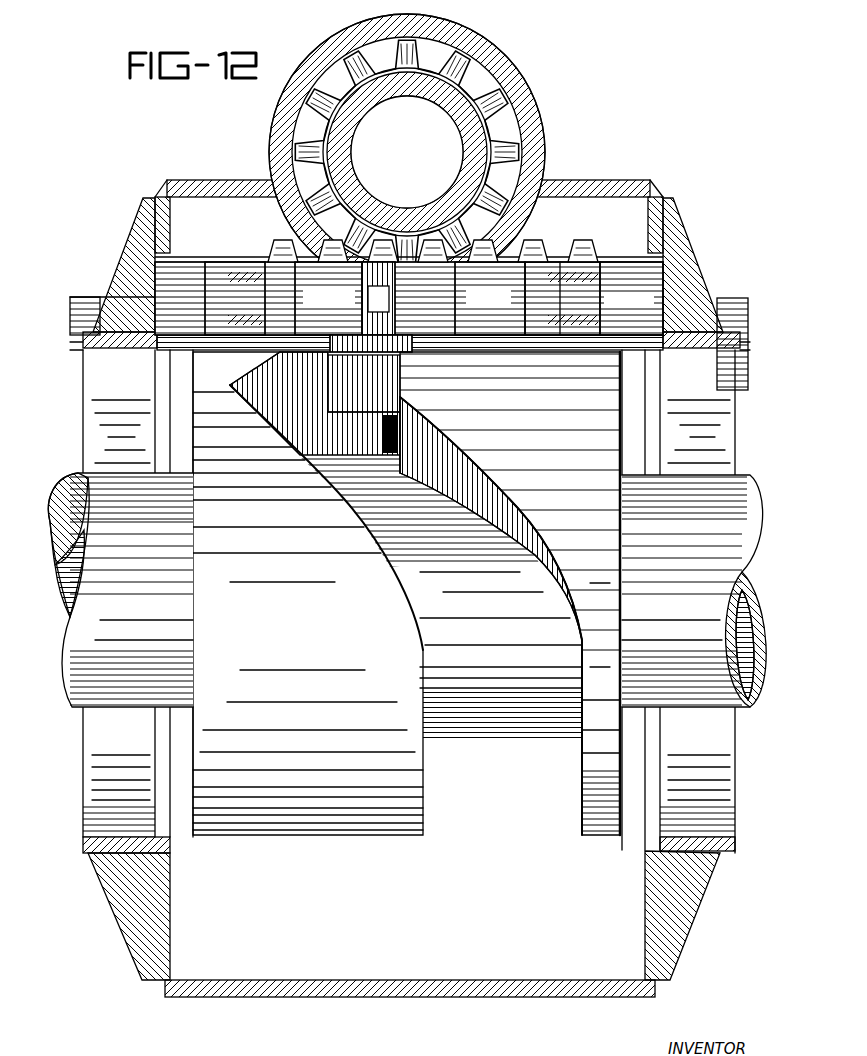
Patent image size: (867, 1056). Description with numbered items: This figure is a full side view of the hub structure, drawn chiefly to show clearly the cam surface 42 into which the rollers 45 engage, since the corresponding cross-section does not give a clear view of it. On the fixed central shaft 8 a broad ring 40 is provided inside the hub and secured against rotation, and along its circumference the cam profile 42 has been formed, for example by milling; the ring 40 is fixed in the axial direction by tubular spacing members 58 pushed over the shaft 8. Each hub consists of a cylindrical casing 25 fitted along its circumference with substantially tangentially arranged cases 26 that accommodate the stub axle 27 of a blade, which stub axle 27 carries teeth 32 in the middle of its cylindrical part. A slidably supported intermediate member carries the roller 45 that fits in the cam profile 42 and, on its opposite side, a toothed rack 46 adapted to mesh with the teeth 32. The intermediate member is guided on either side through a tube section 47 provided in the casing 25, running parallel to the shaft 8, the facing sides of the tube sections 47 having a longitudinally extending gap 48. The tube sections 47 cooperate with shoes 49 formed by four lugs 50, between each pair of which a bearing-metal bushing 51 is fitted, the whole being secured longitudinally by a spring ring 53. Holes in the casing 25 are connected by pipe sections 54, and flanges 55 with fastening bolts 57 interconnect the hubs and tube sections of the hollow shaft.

The fixed central shaft 8 is at (742, 705).
The cylindrical casing 25 is at (582, 182).
The case 26 is at (500, 62).
The stub axle 27 is at (399, 88).
The teeth 32 is at (516, 140).
The broad ring 40 is at (262, 835).
The cam profile 42 is at (455, 778).
The roller 45 is at (330, 405).
The toothed rack 46 is at (540, 250).
The tube section 47 is at (600, 262).
The longitudinally extending gap 48 is at (232, 290).
The shoe 49 is at (577, 312).
The lug 50 is at (262, 288).
The bushing 51 is at (347, 299).
The spring ring 53 is at (452, 306).
The pipe section 54 is at (631, 380).
The flange 55 is at (678, 237).
The fastening bolt 57 is at (731, 298).
The tubular spacing member 58 is at (670, 710).